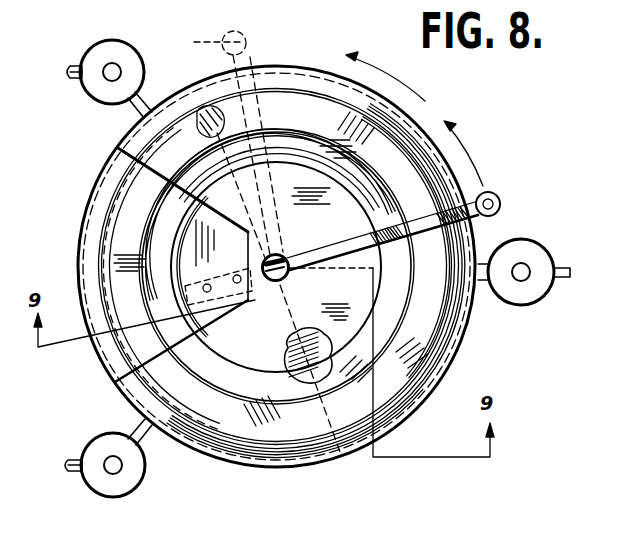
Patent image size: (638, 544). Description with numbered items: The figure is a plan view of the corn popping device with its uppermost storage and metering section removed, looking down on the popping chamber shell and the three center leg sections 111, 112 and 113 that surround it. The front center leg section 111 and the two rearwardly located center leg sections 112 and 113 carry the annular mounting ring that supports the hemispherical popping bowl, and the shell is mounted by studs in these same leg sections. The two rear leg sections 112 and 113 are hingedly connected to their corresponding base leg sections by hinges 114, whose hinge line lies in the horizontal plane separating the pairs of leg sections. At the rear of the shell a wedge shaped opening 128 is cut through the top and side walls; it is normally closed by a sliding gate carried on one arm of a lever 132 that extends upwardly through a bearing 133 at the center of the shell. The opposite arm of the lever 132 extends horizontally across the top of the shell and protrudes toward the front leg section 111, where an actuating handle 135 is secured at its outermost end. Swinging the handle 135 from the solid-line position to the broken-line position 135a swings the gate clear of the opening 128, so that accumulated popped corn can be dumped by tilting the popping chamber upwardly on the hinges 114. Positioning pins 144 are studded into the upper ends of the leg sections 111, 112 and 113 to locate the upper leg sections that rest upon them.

The center leg section 111 is at (545, 250).
The center leg section 112 is at (106, 497).
The center leg section 113 is at (96, 100).
The hinge 114 is at (70, 66).
The wedge shaped opening 128 is at (148, 357).
The lever 132 is at (355, 241).
The bearing 133 is at (282, 252).
The actuating handle 135 is at (501, 204).
The broken line position of the handle 135a is at (222, 47).
The positioning pin 144 is at (121, 67).